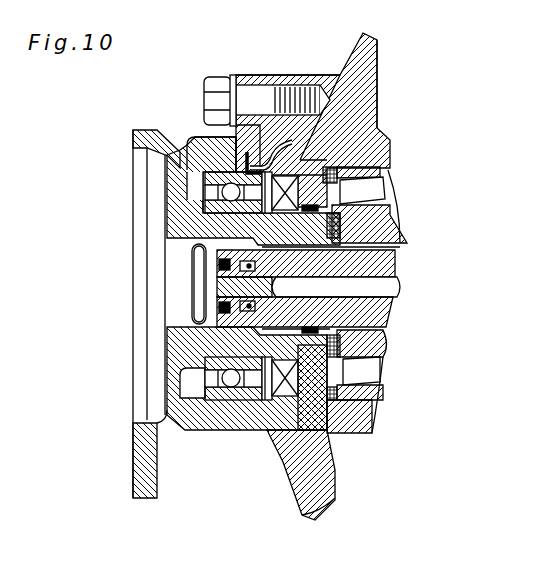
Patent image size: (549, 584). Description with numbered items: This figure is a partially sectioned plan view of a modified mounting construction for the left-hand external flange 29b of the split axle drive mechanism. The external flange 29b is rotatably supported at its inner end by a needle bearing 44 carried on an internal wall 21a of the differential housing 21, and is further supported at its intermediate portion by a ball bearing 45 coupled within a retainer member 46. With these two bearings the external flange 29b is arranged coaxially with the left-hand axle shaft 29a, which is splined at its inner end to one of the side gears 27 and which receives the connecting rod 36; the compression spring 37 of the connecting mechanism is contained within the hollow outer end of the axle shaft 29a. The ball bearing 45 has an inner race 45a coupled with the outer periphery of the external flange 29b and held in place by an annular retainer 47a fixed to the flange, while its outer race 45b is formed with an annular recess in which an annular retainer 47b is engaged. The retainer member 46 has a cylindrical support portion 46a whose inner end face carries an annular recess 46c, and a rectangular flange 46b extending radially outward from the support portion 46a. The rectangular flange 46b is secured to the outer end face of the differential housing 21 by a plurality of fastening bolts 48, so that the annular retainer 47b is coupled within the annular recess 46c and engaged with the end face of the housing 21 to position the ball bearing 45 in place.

The differential housing 21 is at (357, 72).
The internal wall 21a is at (311, 382).
The side gears 27 is at (395, 226).
The axle shaft 29a is at (390, 312).
The external flange 29b is at (140, 498).
The connecting rod 36 is at (400, 287).
The compression spring 37 is at (245, 287).
The needle bearing 44 is at (327, 152).
The ball bearing 45 is at (238, 411).
The inner race 45a is at (215, 208).
The outer race 45b is at (237, 178).
The retainer member 46 is at (208, 432).
The cylindrical support portion 46a is at (250, 422).
The rectangular flange 46b is at (248, 75).
The annular recess 46c is at (238, 110).
The annular retainer 47a is at (272, 184).
The annular retainer 47b is at (263, 163).
The fastening bolts 48 is at (213, 77).